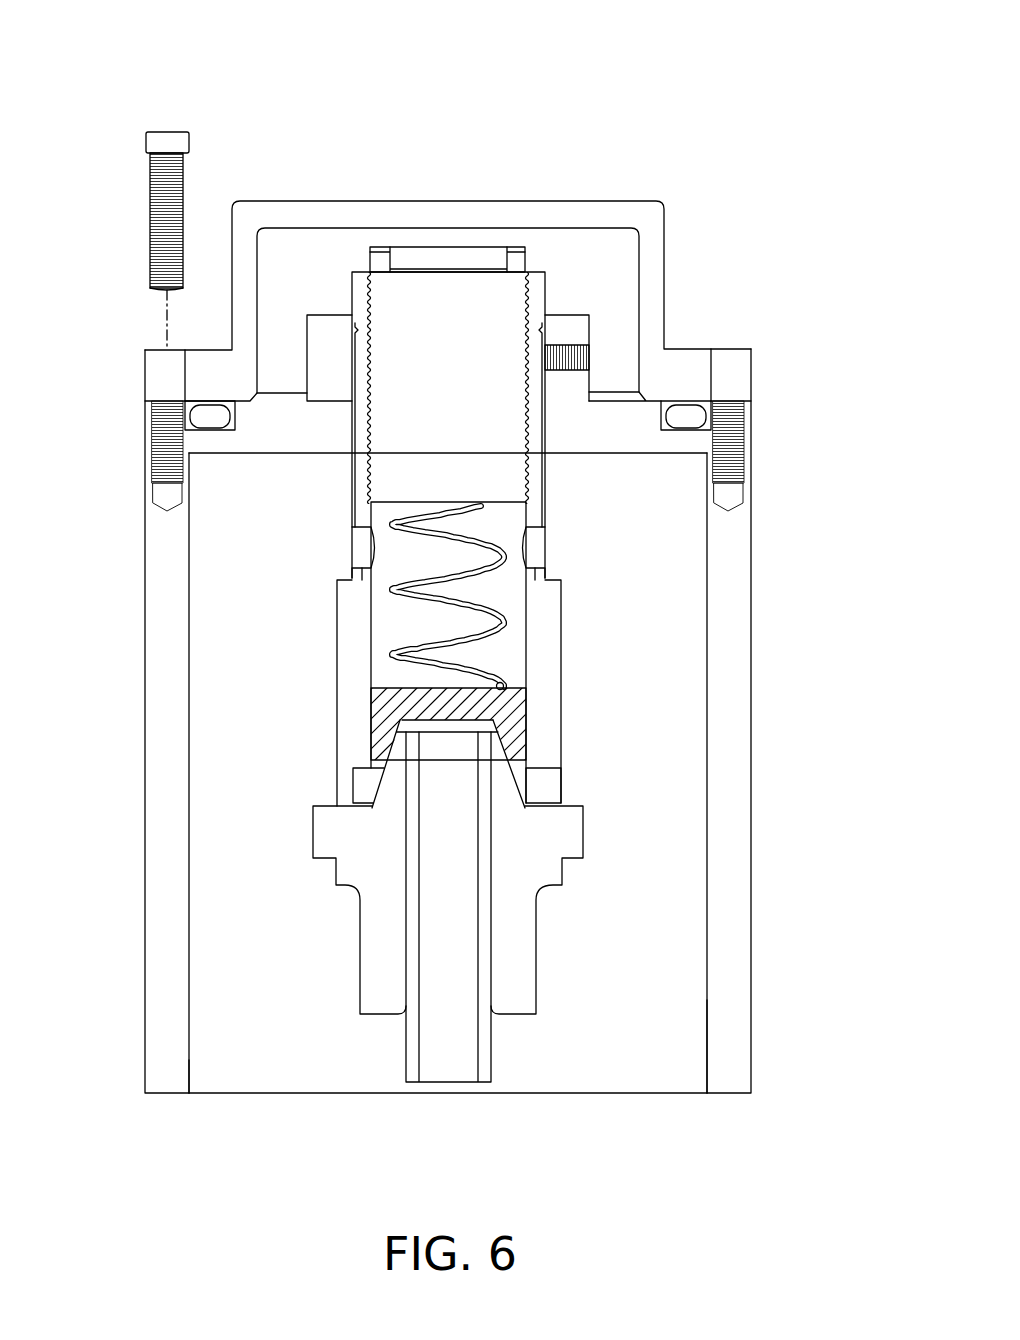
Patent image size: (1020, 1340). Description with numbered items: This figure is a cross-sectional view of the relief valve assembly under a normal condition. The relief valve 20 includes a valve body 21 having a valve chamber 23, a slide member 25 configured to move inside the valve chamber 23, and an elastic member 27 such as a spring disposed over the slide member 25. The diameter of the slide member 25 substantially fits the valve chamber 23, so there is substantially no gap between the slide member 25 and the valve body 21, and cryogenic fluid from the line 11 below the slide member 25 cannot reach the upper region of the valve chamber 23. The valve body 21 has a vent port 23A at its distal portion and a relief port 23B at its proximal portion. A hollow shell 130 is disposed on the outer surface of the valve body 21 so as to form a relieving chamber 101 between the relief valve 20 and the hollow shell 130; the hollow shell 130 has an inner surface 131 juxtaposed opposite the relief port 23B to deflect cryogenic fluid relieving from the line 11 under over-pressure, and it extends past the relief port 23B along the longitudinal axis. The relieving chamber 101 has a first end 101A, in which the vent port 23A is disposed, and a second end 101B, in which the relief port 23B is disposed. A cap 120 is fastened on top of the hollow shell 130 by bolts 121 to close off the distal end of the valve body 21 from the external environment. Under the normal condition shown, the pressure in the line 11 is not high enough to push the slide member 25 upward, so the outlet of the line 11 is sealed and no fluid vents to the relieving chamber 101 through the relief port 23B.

The relief valve 20 is at (112, 37).
The line 11 is at (485, 1066).
The valve body 21 is at (372, 945).
The valve chamber 23 is at (393, 558).
The vent port 23A is at (548, 555).
The relief port 23B is at (548, 782).
The slide member 25 is at (387, 713).
The elastic member 27 is at (393, 650).
The relieving chamber 101 is at (248, 1066).
The first end 101A is at (272, 473).
The second end 101B is at (205, 1074).
The cap 120 is at (655, 266).
The bolts 121 is at (151, 212).
The hollow shell 130 is at (738, 662).
The inner surface 131 is at (703, 1060).